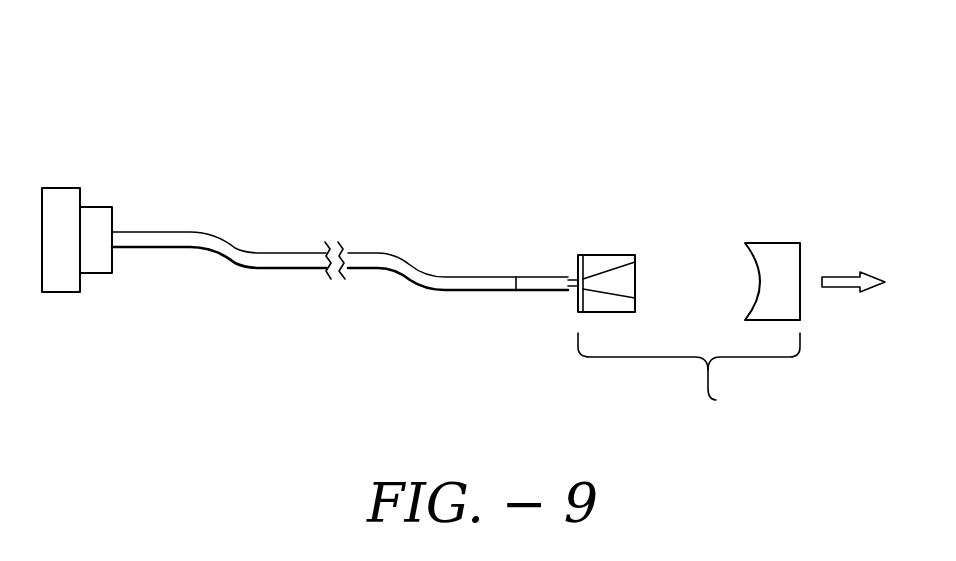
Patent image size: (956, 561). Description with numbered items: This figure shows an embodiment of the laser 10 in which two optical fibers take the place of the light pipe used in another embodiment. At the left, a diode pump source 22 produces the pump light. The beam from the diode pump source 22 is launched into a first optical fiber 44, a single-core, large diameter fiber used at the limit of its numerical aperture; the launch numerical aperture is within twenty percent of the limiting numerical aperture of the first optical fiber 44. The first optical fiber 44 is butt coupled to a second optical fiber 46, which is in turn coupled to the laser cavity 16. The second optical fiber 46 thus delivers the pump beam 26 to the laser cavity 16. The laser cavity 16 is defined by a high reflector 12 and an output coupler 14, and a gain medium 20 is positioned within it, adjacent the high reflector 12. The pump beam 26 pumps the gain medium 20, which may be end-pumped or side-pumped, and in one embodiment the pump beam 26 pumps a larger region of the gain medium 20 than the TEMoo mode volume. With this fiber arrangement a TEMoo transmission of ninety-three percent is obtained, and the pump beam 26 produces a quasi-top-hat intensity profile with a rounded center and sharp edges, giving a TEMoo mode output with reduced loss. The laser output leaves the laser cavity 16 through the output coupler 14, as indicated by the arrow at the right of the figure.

The laser 10 is at (492, 84).
The diode pump source 22 is at (60, 194).
The first optical fiber 44 is at (175, 233).
The second optical fiber 46 is at (373, 263).
The pump beam 26 is at (575, 282).
The high reflector 12 is at (582, 254).
The gain medium 20 is at (606, 262).
The output coupler 14 is at (775, 257).
The laser cavity 16 is at (689, 374).